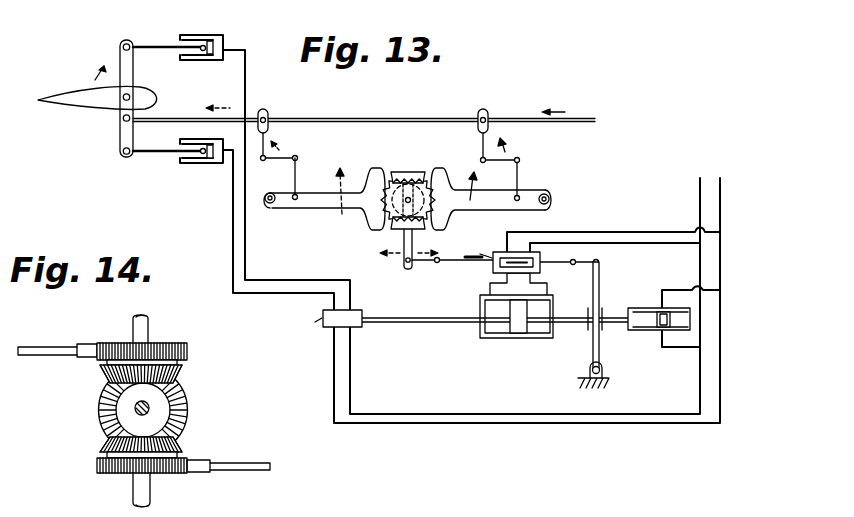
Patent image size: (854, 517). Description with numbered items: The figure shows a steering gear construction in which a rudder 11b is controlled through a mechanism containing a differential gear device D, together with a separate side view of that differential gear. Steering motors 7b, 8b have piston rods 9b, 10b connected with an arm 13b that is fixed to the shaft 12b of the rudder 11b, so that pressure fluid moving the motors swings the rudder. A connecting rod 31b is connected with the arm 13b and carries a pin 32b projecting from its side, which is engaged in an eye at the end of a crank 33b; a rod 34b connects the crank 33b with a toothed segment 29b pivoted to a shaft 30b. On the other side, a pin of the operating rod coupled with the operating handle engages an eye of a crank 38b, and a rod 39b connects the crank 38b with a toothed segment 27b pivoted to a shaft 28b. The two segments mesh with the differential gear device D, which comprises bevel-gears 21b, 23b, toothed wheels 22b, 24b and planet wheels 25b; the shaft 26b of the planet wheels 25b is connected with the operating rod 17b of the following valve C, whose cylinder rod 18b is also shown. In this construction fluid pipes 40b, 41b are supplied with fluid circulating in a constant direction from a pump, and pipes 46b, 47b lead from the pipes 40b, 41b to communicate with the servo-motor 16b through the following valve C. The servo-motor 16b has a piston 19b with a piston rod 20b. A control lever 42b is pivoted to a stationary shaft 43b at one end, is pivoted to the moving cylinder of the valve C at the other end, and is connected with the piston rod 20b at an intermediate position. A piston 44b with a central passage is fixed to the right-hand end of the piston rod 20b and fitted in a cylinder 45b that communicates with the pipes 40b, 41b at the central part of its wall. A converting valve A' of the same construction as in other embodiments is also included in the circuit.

In FIG. 13, the steering motor 7b is at (219, 36).
In FIG. 13, the steering motor 8b is at (218, 164).
In FIG. 13, the piston rod 9b is at (158, 42).
In FIG. 13, the piston rod 10b is at (158, 155).
In FIG. 13, the rudder 11b is at (95, 104).
In FIG. 13, the shaft 12b is at (133, 95).
In FIG. 13, the arm 13b is at (118, 140).
In FIG. 13, the servo-motor 16b is at (490, 338).
In FIG. 13, the operating rod 17b is at (455, 262).
In FIG. 13, the cylinder rod 18b is at (568, 264).
In FIG. 13, the piston 19b is at (518, 334).
In FIG. 13, the piston rod 20b is at (410, 323).
In FIG. 14, the bevel-gear 21b is at (104, 442).
In FIG. 14, the toothed wheel 22b is at (98, 466).
In FIG. 14, the bevel-gear 23b is at (102, 374).
In FIG. 14, the toothed wheel 24b is at (118, 343).
In FIG. 13, the planet wheels 25b is at (410, 170).
In FIG. 14, the planet wheels 25b is at (188, 416).
In FIG. 13, the shaft 26b is at (404, 263).
In FIG. 14, the shaft 26b is at (150, 407).
In FIG. 13, the toothed segment 27b is at (462, 206).
In FIG. 14, the toothed segment 27b is at (233, 472).
In FIG. 13, the shaft 28b is at (550, 199).
In FIG. 13, the toothed segment 29b is at (322, 200).
In FIG. 14, the toothed segment 29b is at (42, 345).
In FIG. 13, the shaft 30b is at (269, 206).
In FIG. 13, the connecting rod 31b is at (300, 115).
In FIG. 13, the pin 32b is at (263, 108).
In FIG. 13, the crank 33b is at (281, 143).
In FIG. 13, the rod 34b is at (294, 180).
In FIG. 13, the crank 38b is at (482, 152).
In FIG. 13, the rod 39b is at (520, 165).
In FIG. 13, the fluid pipe 40b is at (720, 190).
In FIG. 13, the fluid pipe 41b is at (699, 187).
In FIG. 13, the control lever 42b is at (601, 282).
In FIG. 13, the stationary shaft 43b is at (604, 372).
In FIG. 13, the piston 44b is at (659, 327).
In FIG. 13, the cylinder 45b is at (673, 337).
In FIG. 13, the pipe 46b is at (622, 231).
In FIG. 13, the pipe 47b is at (661, 242).
In FIG. 13, the converting valve A' is at (327, 321).
In FIG. 13, the following valve C is at (479, 250).
In FIG. 13, the differential gear device D is at (420, 155).
In FIG. 14, the differential gear device D is at (85, 405).